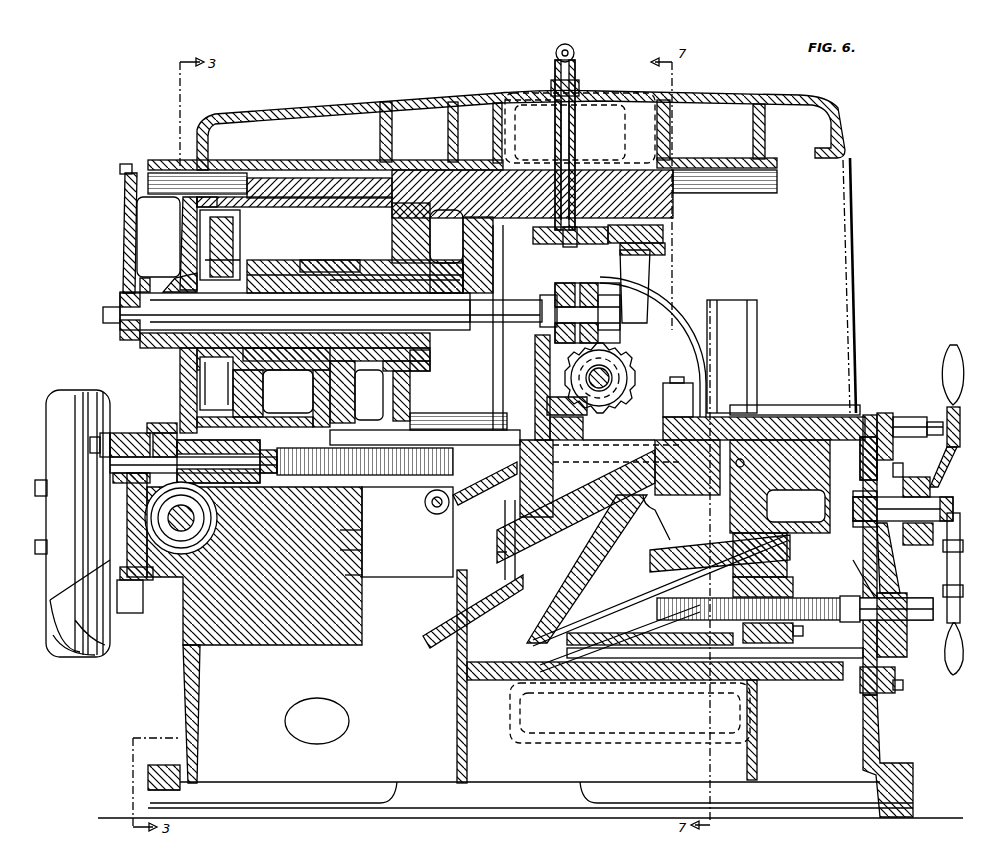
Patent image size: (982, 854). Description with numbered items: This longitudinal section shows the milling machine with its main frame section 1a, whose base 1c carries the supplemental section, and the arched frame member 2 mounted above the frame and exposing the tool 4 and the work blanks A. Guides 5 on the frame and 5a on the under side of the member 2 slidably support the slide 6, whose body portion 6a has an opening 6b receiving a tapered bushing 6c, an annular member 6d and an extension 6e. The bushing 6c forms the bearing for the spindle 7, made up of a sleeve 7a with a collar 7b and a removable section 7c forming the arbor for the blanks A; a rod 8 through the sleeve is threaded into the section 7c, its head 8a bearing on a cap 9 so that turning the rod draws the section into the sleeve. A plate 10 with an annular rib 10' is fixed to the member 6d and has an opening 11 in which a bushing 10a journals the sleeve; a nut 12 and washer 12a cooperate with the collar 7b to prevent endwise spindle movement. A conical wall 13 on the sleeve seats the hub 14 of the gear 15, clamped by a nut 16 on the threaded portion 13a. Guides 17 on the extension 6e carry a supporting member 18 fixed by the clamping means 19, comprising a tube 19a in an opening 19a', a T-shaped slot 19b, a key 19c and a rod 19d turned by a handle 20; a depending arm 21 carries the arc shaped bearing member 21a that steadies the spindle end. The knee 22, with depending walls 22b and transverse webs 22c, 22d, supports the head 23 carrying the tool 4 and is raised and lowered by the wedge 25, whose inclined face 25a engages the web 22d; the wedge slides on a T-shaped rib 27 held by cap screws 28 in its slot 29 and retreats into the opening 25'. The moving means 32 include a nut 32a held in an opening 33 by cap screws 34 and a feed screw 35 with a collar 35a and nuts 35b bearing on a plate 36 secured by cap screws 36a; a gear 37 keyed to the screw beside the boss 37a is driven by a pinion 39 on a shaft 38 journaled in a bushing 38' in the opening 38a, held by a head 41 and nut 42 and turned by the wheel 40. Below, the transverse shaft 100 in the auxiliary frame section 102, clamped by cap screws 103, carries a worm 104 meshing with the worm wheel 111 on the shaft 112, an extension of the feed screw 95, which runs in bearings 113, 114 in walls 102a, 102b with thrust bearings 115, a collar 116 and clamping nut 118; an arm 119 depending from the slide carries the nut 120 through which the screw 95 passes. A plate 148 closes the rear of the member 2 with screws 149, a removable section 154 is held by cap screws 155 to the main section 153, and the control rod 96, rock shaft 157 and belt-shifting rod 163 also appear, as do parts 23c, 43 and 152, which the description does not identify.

The main frame section 1a is at (500, 576).
The base 1c is at (880, 740).
The arched frame member 2 is at (496, 134).
The tool 4 is at (633, 346).
The guide 5 is at (440, 412).
The guide 5a is at (165, 195).
The slide 6 is at (435, 231).
The body portion 6a is at (338, 260).
The opening 6b is at (280, 258).
The bushing 6c is at (318, 258).
The annular member 6d is at (262, 395).
The extension 6e is at (665, 220).
The spindle 7 is at (446, 289).
The sleeve 7a is at (140, 300).
The flange or collar 7b is at (450, 262).
The spindle section 7c is at (498, 298).
The rod 8 is at (342, 312).
The head 8a is at (120, 297).
The block or cap 9 is at (108, 323).
The plate 10 is at (177, 243).
The annular rib 10' is at (228, 173).
The bushing 10a is at (172, 280).
The opening 11 is at (180, 378).
The nut 12 is at (140, 283).
The washer 12a is at (122, 335).
The conical wall 13 is at (233, 400).
The screw threaded portion 13a is at (205, 345).
The hub 14 is at (285, 412).
The gear 15 is at (240, 238).
The nut 16 is at (225, 262).
The guides 17 is at (477, 255).
The supporting member 18 is at (650, 275).
The clamping means 19 is at (570, 144).
The tube or sleeve 19a is at (542, 160).
The opening 19a' is at (532, 81).
The T-shaped slot 19b is at (655, 248).
The T-shaped key 19c is at (550, 327).
The rod 19d is at (568, 118).
The handle 20 is at (573, 50).
The depending arm 21 is at (655, 292).
The arc shaped bearing member 21a is at (650, 312).
The knee 22 is at (612, 473).
The depending spaced walls 22b is at (545, 705).
The transverse web 22c is at (625, 505).
The transverse web 22d is at (580, 590).
The head 23 is at (695, 385).
The cap 23c is at (683, 378).
The wedge 25 is at (770, 555).
The opening 25' is at (796, 506).
The inclined face 25a is at (675, 560).
The rib 27 is at (810, 675).
The cap screws 28 is at (600, 672).
The recess or slot 29 is at (630, 640).
The wedge moving means 32 is at (906, 612).
The nut 32a is at (793, 585).
The opening 33 is at (762, 680).
The cap screws 34 is at (793, 633).
The feed screw 35 is at (815, 608).
The collar 35a is at (840, 630).
The nuts 35b is at (945, 650).
The plate 36 is at (895, 662).
The cap screws 36a is at (903, 470).
The gear 37 is at (865, 655).
The hollow boss 37a is at (855, 556).
The shaft 38 is at (903, 509).
The bushing 38' is at (899, 558).
The opening 38a is at (855, 524).
The pinion 39 is at (860, 475).
The wheel 40 is at (940, 410).
The head 41 is at (855, 505).
The nut 42 is at (953, 513).
The hand lever 43 is at (923, 484).
The feed screw 95 is at (397, 476).
The rod 96 is at (437, 514).
The transverse shaft 100 is at (177, 530).
The auxiliary frame section 102 is at (130, 612).
The wall 102a is at (130, 505).
The wall 102b is at (370, 530).
The cap screws 103 is at (90, 445).
The worm 104 is at (215, 558).
The worm wheel 111 is at (178, 482).
The shaft 112 is at (193, 462).
The bearing 113 is at (120, 432).
The bearing 114 is at (300, 423).
The thrust bearings 115 is at (290, 486).
The collar 116 is at (275, 450).
The nut or clamping collar 118 is at (158, 432).
The arm 119 is at (312, 392).
The nut 120 is at (358, 450).
The plate 148 is at (126, 205).
The screws 149 is at (120, 170).
The bar 152 is at (775, 420).
The main section 153 is at (50, 580).
The removable section 154 is at (46, 462).
The cap screws 155 is at (35, 488).
The rock shaft 157 is at (371, 575).
The rod 163 is at (368, 550).
The work blank A is at (582, 282).